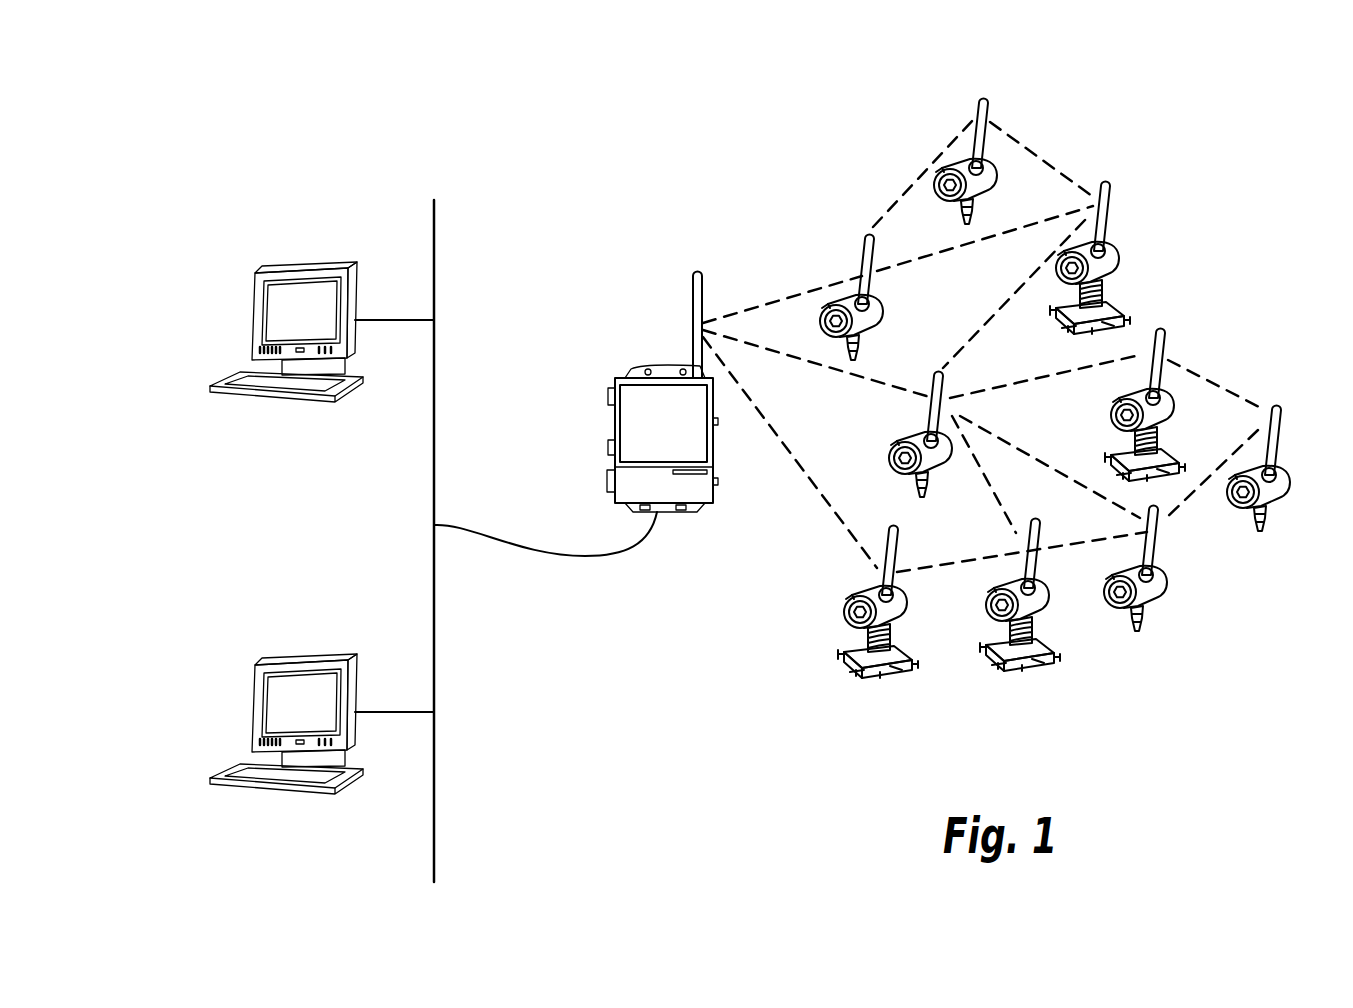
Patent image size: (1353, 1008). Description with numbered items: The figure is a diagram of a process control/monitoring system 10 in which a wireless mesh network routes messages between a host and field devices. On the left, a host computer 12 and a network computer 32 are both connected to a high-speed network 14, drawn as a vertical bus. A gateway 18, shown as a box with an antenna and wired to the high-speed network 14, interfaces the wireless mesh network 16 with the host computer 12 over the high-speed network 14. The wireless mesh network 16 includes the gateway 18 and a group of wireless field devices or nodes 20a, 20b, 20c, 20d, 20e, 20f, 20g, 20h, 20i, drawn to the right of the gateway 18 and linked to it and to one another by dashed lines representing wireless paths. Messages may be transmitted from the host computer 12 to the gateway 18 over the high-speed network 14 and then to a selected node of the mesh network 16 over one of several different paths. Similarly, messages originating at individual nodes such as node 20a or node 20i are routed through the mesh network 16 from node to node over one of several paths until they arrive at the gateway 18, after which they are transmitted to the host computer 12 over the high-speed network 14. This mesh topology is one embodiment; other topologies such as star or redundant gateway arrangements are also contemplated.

The process control/monitoring system 10 is at (685, 124).
The host computer 12 is at (252, 304).
The high-speed network 14 is at (434, 252).
The wireless mesh network 16 is at (778, 648).
The gateway 18 is at (612, 418).
The wireless field device 20a is at (881, 319).
The wireless field device 20b is at (938, 455).
The wireless field device 20c is at (893, 612).
The wireless field device 20d is at (995, 183).
The wireless field device 20e is at (1030, 600).
The wireless field device 20f is at (1118, 260).
The wireless field device 20g is at (1152, 413).
The wireless field device 20h is at (1150, 590).
The wireless field device 20i is at (1268, 495).
The network computer 32 is at (236, 686).